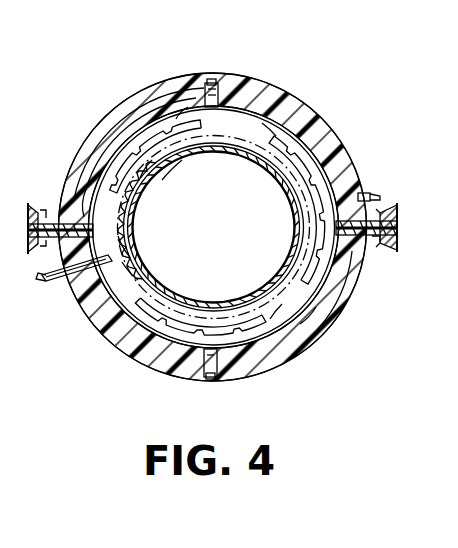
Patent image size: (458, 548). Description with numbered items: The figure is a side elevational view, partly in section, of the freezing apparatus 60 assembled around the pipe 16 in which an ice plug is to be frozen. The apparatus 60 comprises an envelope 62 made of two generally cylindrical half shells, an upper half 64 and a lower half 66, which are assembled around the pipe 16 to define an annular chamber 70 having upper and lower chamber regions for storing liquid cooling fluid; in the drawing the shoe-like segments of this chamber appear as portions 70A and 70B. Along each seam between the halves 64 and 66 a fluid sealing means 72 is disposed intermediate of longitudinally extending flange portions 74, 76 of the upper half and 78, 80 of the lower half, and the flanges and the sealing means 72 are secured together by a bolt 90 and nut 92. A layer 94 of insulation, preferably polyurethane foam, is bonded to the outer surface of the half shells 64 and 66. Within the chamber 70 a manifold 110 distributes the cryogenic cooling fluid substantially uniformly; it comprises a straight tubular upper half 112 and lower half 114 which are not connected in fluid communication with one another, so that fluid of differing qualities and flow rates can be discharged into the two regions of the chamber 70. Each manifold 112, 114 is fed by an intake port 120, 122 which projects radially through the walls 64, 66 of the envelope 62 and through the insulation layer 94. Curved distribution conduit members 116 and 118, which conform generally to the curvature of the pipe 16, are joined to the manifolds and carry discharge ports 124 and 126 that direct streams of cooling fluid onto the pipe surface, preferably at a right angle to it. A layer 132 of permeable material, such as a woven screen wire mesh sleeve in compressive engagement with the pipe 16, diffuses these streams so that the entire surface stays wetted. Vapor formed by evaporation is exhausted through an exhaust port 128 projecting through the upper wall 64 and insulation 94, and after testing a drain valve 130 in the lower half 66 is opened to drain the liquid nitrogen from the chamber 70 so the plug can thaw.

The pipe 16 is at (146, 206).
The apparatus 60 is at (318, 67).
The envelope 62 is at (312, 138).
The upper half shell 64 is at (105, 162).
The lower half shell 66 is at (132, 248).
The annular chamber 70 is at (326, 226).
The brake shoe 70A is at (175, 130).
The brake shoe 70B is at (275, 333).
The fluid sealing means 72 is at (34, 236).
The longitudinal flange portion 74 is at (78, 196).
The longitudinal flange portion 76 is at (56, 268).
The longitudinal flange portion 78 is at (386, 218).
The longitudinal flange portion 80 is at (358, 256).
The bolt 90 is at (46, 214).
The nut 92 is at (370, 246).
The insulation layer 94 is at (108, 130).
The manifold 110 is at (112, 233).
The upper manifold half 112 is at (293, 207).
The lower manifold half 114 is at (136, 272).
The distribution conduit member 116 is at (182, 108).
The distribution conduit member 118 is at (332, 309).
The intake port 120 is at (380, 197).
The intake port 122 is at (60, 281).
The discharge port 124 is at (158, 170).
The discharge port 126 is at (356, 340).
The exhaust port 128 is at (212, 78).
The drain valve 130 is at (211, 380).
The permeable material layer 132 is at (176, 160).